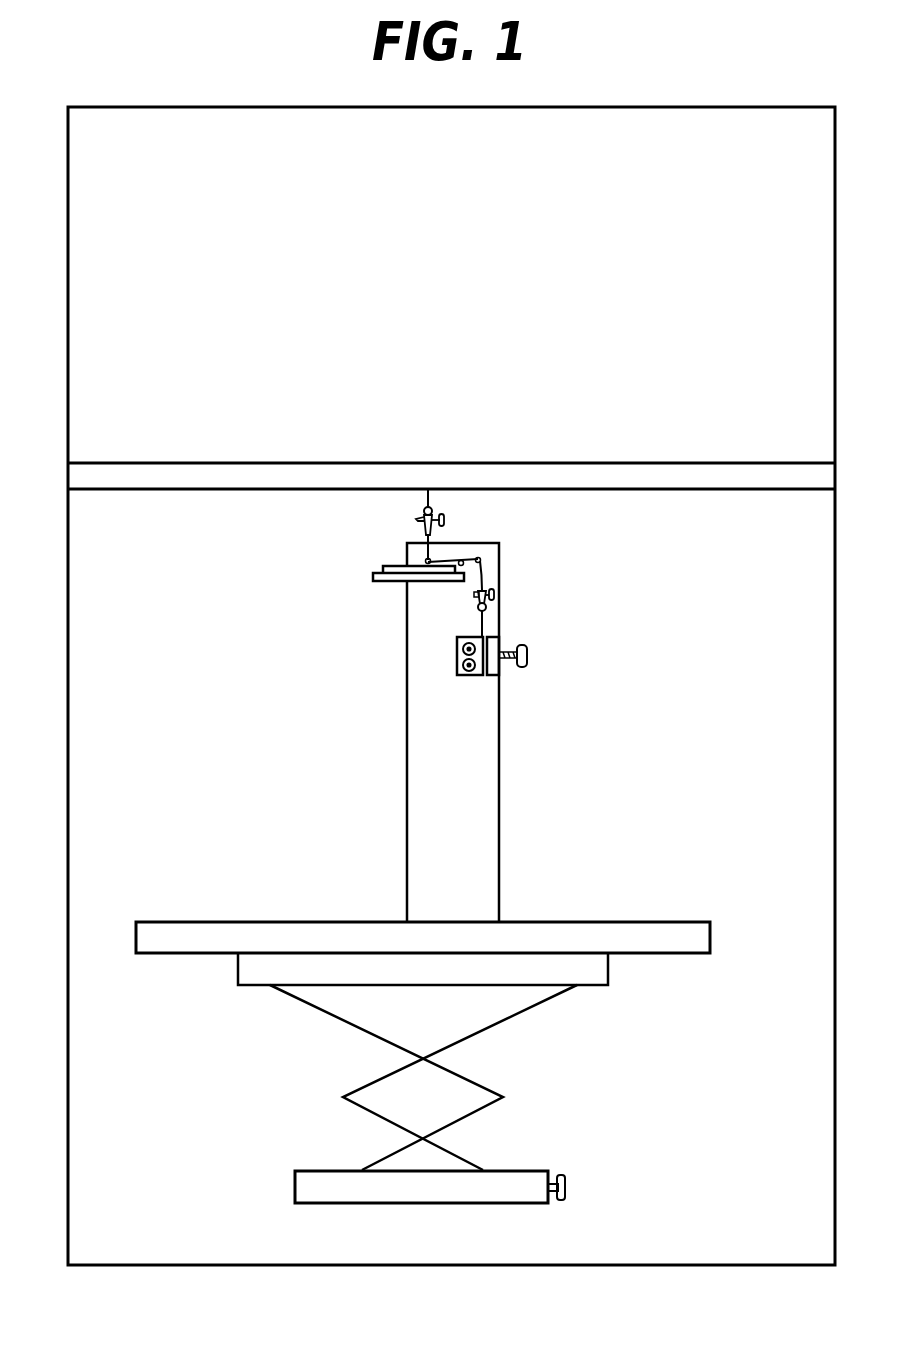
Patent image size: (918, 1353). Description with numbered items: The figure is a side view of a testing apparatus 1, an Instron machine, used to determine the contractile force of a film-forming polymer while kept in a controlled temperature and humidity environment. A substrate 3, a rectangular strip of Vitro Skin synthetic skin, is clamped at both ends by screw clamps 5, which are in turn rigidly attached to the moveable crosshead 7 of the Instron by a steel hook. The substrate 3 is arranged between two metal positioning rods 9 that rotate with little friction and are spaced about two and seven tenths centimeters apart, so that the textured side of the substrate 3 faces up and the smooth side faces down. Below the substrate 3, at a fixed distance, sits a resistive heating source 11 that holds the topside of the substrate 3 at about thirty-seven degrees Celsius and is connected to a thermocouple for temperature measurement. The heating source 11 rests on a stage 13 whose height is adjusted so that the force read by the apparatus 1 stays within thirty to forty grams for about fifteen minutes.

The testing apparatus 1 is at (67, 290).
The substrate 3 is at (487, 563).
The screw clamps 5 is at (425, 533).
The moveable crosshead 7 is at (662, 490).
The positioning rods 9 is at (426, 562).
The resistive heating source 11 is at (383, 568).
The stage 13 is at (632, 922).